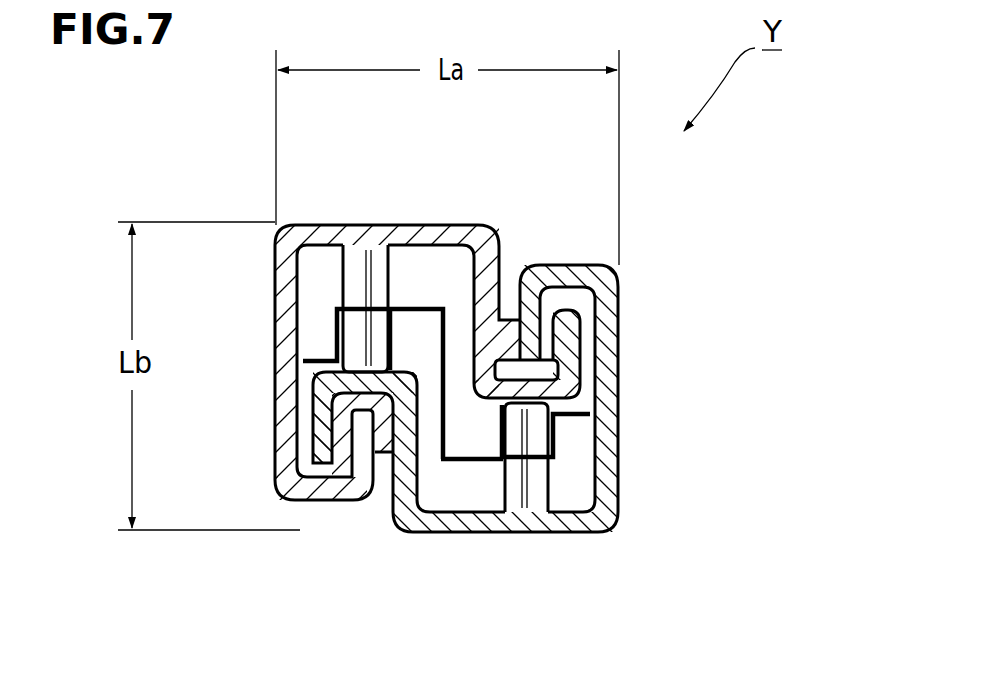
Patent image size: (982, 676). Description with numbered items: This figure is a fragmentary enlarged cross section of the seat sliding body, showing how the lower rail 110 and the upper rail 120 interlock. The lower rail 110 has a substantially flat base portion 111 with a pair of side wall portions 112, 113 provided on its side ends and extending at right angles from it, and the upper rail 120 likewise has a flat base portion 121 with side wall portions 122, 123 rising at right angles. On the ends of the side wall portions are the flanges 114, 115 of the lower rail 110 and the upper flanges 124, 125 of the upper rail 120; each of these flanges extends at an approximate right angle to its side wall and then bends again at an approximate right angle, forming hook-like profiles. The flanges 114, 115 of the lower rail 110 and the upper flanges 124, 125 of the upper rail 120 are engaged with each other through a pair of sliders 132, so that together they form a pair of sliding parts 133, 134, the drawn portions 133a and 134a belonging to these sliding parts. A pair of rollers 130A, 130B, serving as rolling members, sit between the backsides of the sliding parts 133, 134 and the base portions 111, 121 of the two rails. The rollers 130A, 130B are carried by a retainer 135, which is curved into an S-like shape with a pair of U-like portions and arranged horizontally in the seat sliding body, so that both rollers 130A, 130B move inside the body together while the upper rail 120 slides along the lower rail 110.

The lower rail 110 is at (449, 464).
The base portion 111 is at (478, 535).
The side wall portion 112 is at (620, 442).
The side wall portion 113 is at (392, 492).
The flange 114 is at (540, 302).
The flange 115 is at (313, 442).
The upper rail 120 is at (433, 331).
The base portion 121 is at (366, 225).
The side wall portion 122 is at (500, 265).
The side wall portion 123 is at (275, 345).
The upper flange 124 is at (583, 355).
The upper flange 125 is at (347, 445).
The roller 130A is at (548, 530).
The roller 130B is at (352, 275).
The slider 132 is at (560, 372).
The sliding part 133 is at (630, 464).
The clip leg 133a is at (532, 420).
The sliding part 134 is at (334, 439).
The clip leg 134a is at (400, 385).
The retainer 135 is at (451, 466).